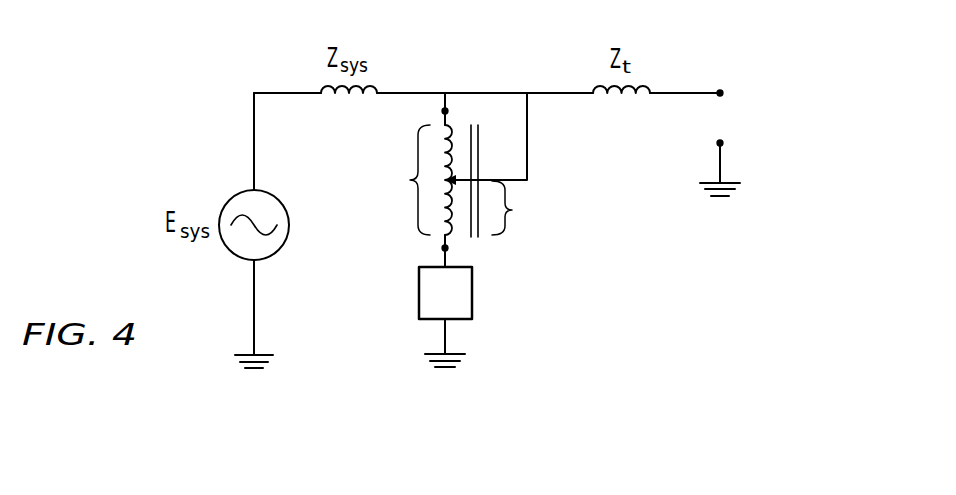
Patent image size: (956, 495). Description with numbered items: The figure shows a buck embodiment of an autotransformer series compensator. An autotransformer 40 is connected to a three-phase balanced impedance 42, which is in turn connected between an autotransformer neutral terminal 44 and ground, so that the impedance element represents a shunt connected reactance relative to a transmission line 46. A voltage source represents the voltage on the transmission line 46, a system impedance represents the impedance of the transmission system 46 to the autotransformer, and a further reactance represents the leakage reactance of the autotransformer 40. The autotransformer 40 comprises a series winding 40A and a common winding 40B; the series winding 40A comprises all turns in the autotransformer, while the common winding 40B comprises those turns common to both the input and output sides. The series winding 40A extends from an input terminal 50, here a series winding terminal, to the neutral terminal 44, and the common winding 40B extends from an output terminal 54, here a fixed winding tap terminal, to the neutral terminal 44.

The autotransformer 40 is at (460, 167).
The series winding 40A is at (410, 180).
The common winding 40B is at (512, 210).
The 3-phase balanced impedance 42 is at (419, 297).
The autotransformer neutral terminal 44 is at (442, 248).
The transmission line 46 is at (395, 92).
The input terminal 50 is at (446, 110).
The output terminal 54 is at (453, 175).